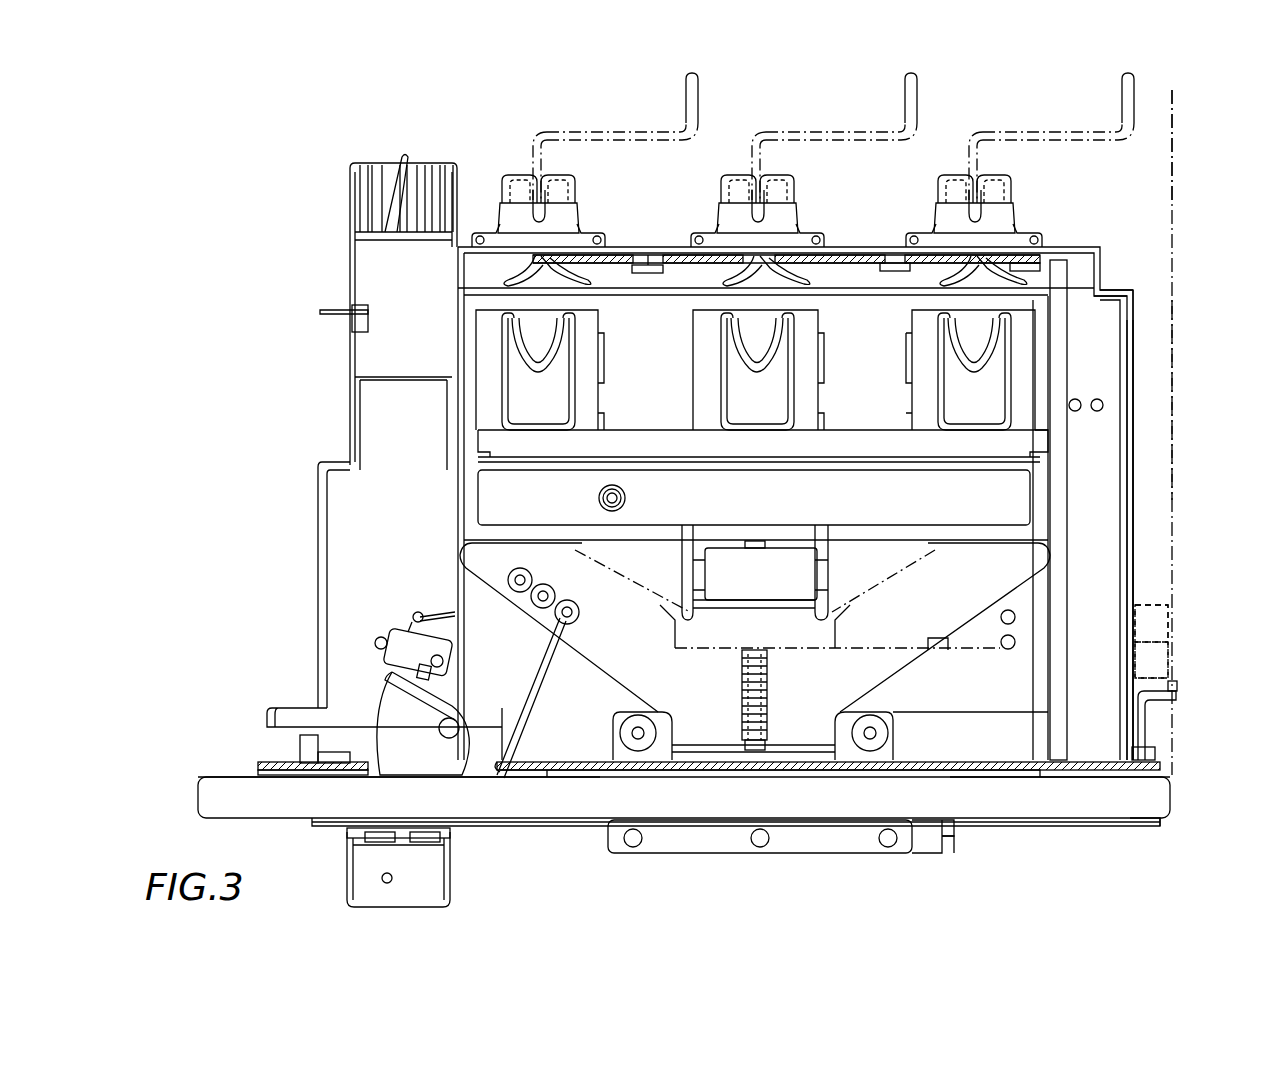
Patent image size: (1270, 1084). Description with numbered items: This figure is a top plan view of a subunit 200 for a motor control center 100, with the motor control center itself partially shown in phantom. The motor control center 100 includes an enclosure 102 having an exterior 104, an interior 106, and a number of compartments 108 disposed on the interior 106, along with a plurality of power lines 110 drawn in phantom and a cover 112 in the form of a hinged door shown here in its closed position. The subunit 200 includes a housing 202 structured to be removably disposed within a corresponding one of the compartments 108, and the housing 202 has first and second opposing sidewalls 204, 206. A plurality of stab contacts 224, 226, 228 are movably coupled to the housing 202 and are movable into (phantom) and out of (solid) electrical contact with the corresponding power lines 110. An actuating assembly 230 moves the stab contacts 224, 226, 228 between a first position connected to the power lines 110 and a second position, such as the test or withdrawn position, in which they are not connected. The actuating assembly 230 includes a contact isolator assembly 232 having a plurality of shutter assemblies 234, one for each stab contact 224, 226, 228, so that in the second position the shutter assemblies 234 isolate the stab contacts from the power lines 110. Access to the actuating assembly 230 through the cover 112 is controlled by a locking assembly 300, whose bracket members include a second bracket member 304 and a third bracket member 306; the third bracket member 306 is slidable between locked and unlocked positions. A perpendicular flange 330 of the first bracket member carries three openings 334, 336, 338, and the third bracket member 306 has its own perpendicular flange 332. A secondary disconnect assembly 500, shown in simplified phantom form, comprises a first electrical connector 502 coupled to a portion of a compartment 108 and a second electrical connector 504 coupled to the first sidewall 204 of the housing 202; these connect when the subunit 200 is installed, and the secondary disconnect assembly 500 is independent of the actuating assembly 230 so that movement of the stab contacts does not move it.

The motor control center 100 is at (1180, 229).
The enclosure 102 is at (1178, 395).
The exterior 104 is at (1178, 172).
The interior 106 is at (1143, 343).
The compartments 108 is at (1150, 318).
The power lines 110 is at (688, 112).
The cover 112 is at (1036, 822).
The subunit 200 is at (709, 512).
The housing 202 is at (292, 594).
The first sidewall 204 is at (1140, 481).
The second sidewall 206 is at (318, 484).
The stab contact 224 is at (1018, 186).
The stab contact 226 is at (800, 186).
The stab contact 228 is at (570, 184).
The actuating assembly 230 is at (778, 657).
The contact isolator assembly 232 is at (649, 248).
The shutter assemblies 234 is at (566, 281).
The locking assembly 300 is at (628, 857).
The second bracket member 304 is at (700, 858).
The third bracket member 306 is at (927, 858).
The perpendicular flange 330 is at (842, 845).
The perpendicular flange 332 is at (944, 850).
The opening 334 is at (888, 828).
The opening 336 is at (760, 828).
The opening 338 is at (633, 828).
The secondary disconnect assembly 500 is at (1180, 639).
The first electrical connector 502 is at (1160, 607).
The second electrical connector 504 is at (1160, 657).